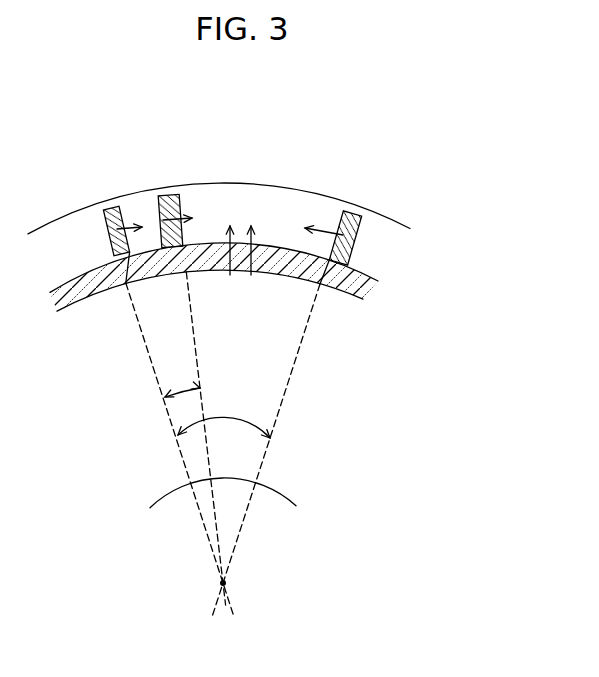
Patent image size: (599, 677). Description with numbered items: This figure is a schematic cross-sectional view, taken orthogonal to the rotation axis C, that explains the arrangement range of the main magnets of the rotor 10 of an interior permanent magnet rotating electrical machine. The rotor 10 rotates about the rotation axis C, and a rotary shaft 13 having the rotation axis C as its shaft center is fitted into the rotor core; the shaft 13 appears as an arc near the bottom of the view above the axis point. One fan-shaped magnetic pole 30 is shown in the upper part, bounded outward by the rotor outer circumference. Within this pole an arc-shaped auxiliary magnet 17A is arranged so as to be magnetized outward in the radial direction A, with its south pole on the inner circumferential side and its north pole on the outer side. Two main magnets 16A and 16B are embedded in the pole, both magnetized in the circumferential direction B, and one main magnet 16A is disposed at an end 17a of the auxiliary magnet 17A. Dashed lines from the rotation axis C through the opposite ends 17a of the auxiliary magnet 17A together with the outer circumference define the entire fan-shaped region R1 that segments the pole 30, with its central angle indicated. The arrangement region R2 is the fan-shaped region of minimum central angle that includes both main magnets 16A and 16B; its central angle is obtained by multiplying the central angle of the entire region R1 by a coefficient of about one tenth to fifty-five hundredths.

The rotor 10 is at (487, 177).
The rotary shaft 13 is at (270, 503).
The main magnet 16A is at (112, 209).
The main magnet 16B is at (166, 201).
The auxiliary magnet 17A is at (82, 297).
The end of the auxiliary magnet 17a is at (124, 284).
The magnetic pole 30 is at (226, 192).
The radial direction A is at (48, 148).
The circumferential direction B is at (102, 118).
The rotation axis C is at (223, 583).
The entire region R1 is at (272, 416).
The arrangement region R2 is at (188, 459).